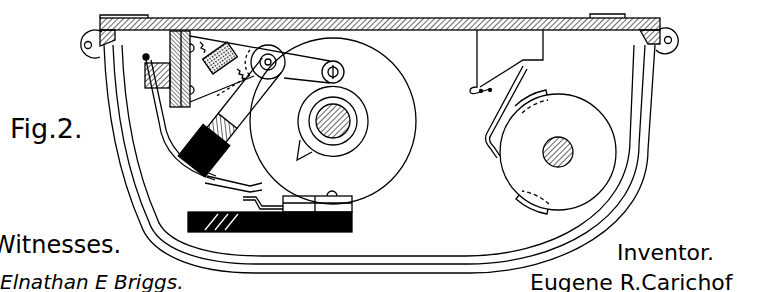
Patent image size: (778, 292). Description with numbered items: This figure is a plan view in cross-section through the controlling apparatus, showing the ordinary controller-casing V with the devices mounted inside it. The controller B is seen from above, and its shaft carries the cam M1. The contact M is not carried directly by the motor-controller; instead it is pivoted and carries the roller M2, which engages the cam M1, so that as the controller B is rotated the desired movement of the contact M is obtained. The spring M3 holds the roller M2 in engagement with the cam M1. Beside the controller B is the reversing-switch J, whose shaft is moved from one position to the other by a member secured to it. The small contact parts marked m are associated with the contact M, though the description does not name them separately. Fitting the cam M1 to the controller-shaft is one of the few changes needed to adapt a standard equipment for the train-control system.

The casing V is at (444, 30).
The controller B is at (400, 162).
The reversing-switch J is at (598, 126).
The contact M is at (217, 179).
The cam M1 is at (370, 130).
The roller M2 is at (346, 72).
The spring M3 is at (234, 72).
The contact arm m is at (172, 159).